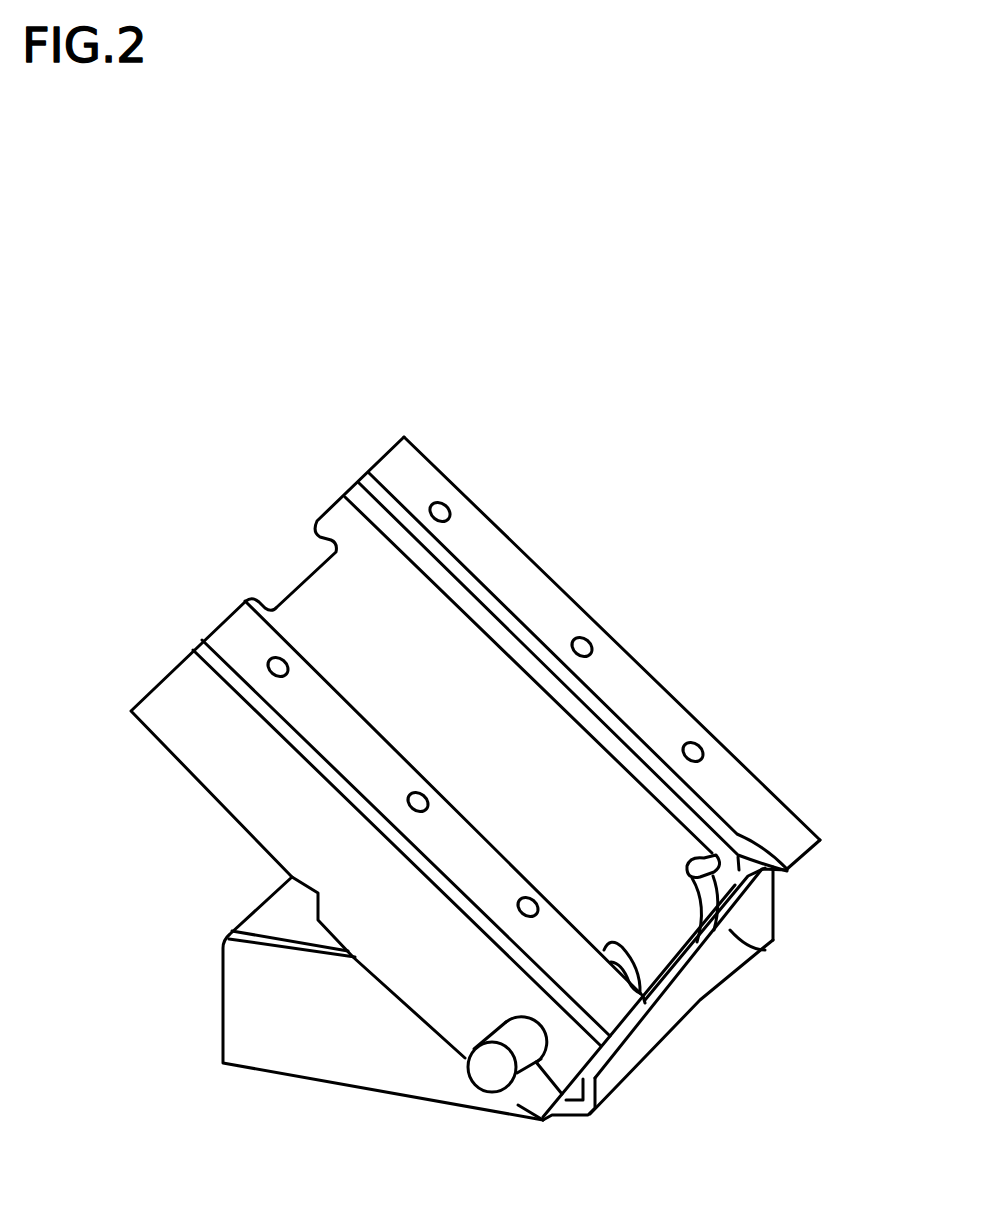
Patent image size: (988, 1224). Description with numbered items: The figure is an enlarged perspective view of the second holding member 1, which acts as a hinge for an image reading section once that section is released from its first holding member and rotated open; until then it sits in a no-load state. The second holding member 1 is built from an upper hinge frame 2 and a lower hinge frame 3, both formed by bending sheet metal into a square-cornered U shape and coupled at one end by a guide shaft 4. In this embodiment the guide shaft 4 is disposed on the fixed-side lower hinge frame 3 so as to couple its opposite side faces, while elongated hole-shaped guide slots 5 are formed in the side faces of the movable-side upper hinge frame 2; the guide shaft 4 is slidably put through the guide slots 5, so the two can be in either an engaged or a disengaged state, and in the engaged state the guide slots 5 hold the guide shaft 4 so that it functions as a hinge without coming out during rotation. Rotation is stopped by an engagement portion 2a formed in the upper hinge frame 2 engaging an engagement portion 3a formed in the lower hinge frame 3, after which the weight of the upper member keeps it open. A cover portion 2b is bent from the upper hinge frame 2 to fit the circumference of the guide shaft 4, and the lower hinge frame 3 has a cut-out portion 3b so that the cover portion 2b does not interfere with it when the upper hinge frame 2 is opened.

The second holding member 1 is at (724, 594).
The upper hinge frame 2 is at (512, 567).
The engagement portion 2a is at (787, 828).
The cover portion 2b is at (667, 947).
The lower hinge frame 3 is at (277, 1045).
The engagement portion 3a is at (762, 885).
The cut-out portion 3b is at (763, 952).
The guide shaft 4 is at (523, 1057).
The guide slots 5 is at (578, 1114).